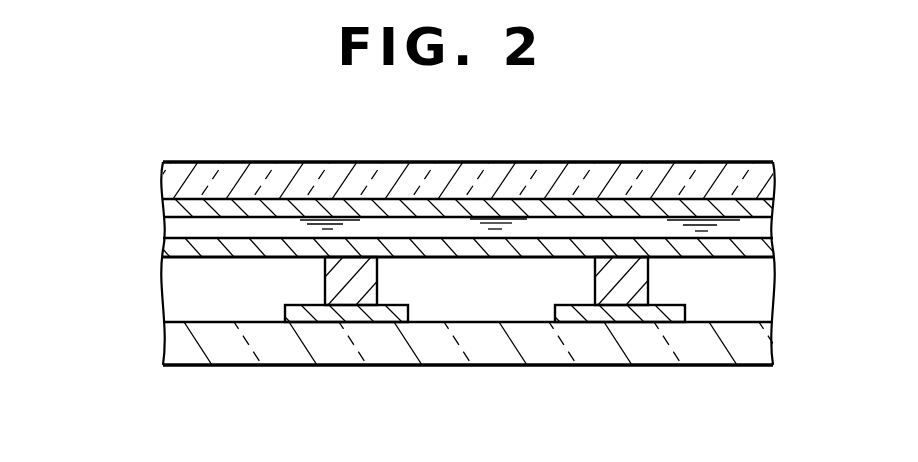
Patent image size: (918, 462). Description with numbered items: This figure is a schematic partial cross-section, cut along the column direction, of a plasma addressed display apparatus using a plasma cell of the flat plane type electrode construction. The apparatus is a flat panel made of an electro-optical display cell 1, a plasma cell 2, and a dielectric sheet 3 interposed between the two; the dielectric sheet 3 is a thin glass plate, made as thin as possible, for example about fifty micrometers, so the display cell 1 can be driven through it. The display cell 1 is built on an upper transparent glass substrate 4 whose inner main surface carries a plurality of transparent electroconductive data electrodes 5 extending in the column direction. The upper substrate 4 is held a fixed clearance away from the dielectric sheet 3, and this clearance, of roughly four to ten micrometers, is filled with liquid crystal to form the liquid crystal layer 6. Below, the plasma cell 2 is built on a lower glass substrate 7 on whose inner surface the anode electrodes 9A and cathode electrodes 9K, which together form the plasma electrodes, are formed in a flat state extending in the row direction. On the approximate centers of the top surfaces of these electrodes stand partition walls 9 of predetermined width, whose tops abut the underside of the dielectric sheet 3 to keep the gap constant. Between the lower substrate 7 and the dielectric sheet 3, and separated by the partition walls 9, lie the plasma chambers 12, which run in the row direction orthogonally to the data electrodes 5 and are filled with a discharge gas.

The electro-optical display cell 1 is at (449, 168).
The plasma cell 2 is at (433, 345).
The dielectric sheet 3 is at (164, 246).
The upper transparent glass substrate 4 is at (444, 182).
The data electrodes 5 is at (298, 206).
The liquid crystal layer 6 is at (577, 228).
The lower glass substrate 7 is at (184, 350).
The partition walls 9 is at (343, 284).
The cathode electrodes 9K is at (383, 313).
The anode electrodes 9A is at (631, 313).
The plasma chambers 12 is at (477, 300).